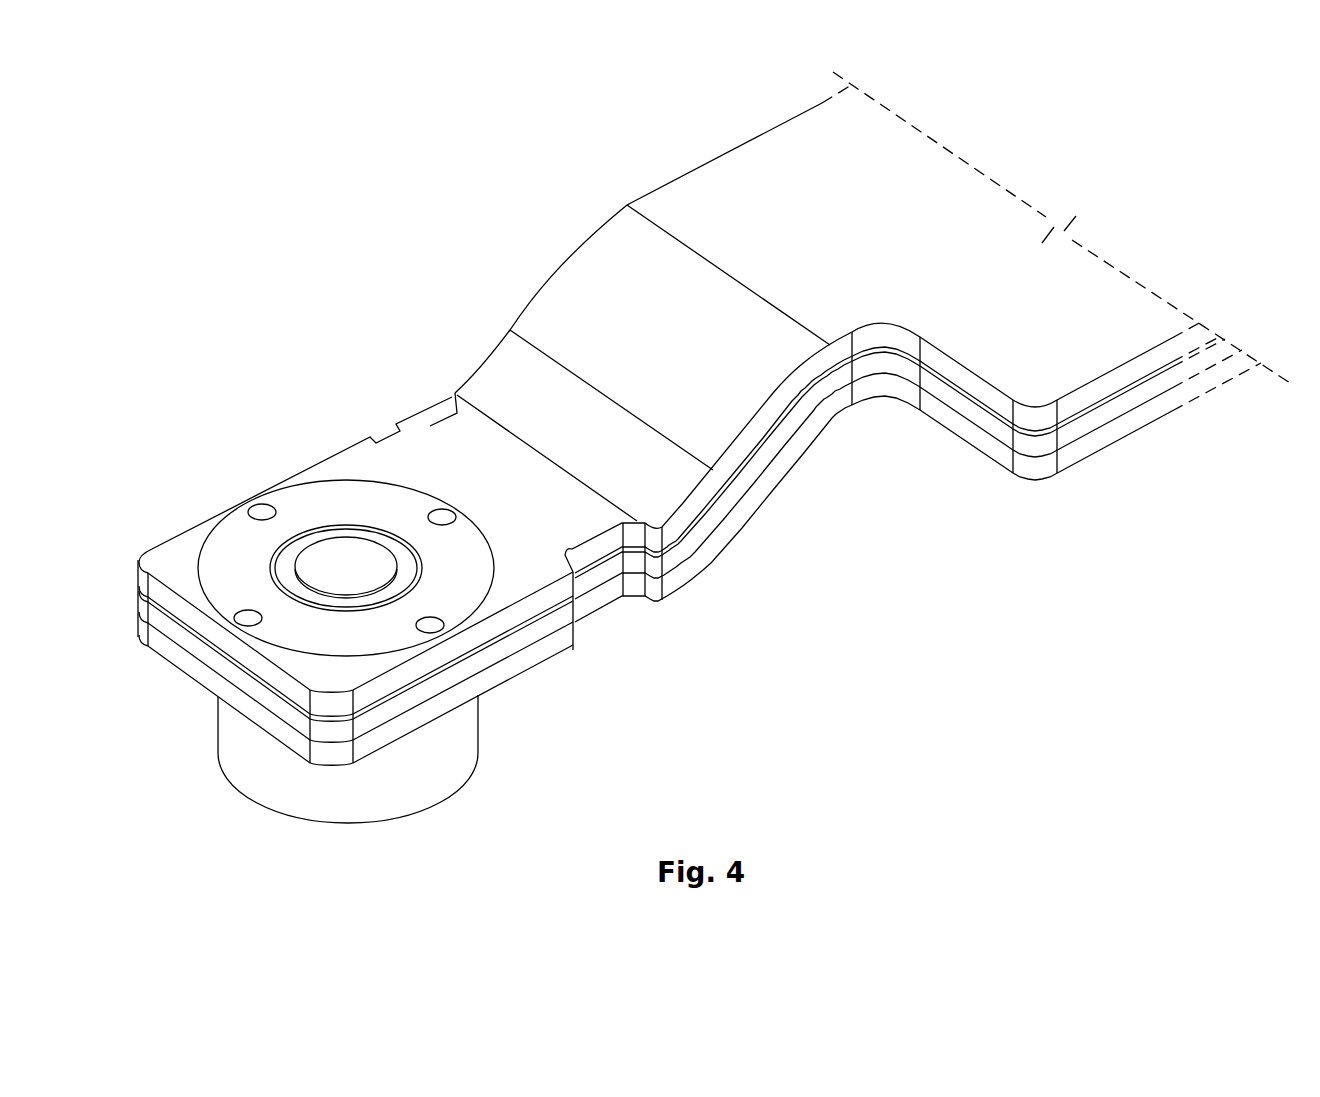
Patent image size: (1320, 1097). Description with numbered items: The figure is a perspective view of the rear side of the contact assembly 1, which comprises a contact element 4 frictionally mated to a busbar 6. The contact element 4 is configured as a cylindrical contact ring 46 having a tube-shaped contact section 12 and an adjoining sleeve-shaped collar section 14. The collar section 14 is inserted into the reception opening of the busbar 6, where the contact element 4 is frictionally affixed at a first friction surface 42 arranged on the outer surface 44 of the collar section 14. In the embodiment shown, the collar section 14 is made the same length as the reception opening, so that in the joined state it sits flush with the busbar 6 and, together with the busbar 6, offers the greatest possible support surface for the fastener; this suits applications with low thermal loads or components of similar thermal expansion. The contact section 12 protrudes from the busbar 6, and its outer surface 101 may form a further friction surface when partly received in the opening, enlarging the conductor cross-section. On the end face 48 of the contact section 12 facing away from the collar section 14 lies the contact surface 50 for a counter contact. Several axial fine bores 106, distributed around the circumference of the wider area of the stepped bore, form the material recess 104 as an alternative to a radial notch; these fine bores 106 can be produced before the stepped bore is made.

The contact assembly 1 is at (211, 128).
The contact element 4 is at (386, 581).
The busbar 6 is at (885, 220).
The contact section 12 is at (409, 783).
The collar section 14 is at (292, 588).
The first friction surface 42 is at (346, 708).
The outer surface of the collar section 44 is at (325, 606).
The cylindrical contact ring 46 is at (487, 721).
The end face 48 is at (409, 783).
The contact surface 50 is at (409, 783).
The outer surface of the contact section 101 is at (272, 778).
The material recess 104 is at (342, 512).
The axial fine bore 106 is at (431, 622).